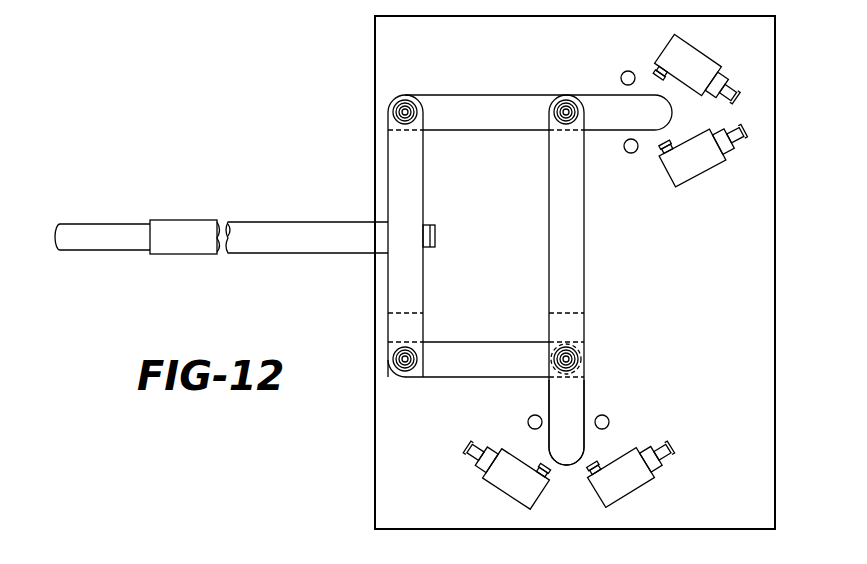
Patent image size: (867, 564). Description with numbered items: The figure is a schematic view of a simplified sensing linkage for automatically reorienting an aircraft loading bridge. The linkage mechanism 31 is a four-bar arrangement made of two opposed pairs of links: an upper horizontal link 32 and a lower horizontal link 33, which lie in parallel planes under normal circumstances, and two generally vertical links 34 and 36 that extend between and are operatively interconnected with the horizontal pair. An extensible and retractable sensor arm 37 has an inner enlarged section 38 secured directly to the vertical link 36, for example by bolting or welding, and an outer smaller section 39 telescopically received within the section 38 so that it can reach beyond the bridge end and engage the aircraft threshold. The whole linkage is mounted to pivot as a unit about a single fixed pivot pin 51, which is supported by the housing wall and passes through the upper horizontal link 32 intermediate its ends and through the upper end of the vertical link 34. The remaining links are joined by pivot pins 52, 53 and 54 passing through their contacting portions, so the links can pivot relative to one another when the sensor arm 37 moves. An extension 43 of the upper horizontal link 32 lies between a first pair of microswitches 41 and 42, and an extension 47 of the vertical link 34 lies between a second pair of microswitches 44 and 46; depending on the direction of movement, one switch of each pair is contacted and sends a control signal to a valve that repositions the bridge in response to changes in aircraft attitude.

The linkage mechanism 31 is at (498, 255).
The upper horizontal link 32 is at (495, 103).
The lower horizontal link 33 is at (467, 368).
The vertical link 34 is at (584, 262).
The vertical link 36 is at (395, 295).
The sensor arm 37 is at (172, 218).
The inner enlarged section 38 is at (240, 225).
The outer smaller section 39 is at (108, 232).
The microswitch 41 is at (698, 62).
The microswitch 42 is at (706, 170).
The extension of horizontal link 43 is at (604, 100).
The microswitch 44 is at (625, 492).
The microswitch 46 is at (500, 490).
The extension of vertical link 47 is at (580, 407).
The pivot pin 51 is at (566, 105).
The pivot pin 52 is at (405, 106).
The pivot pin 53 is at (400, 370).
The pivot pin 54 is at (590, 358).